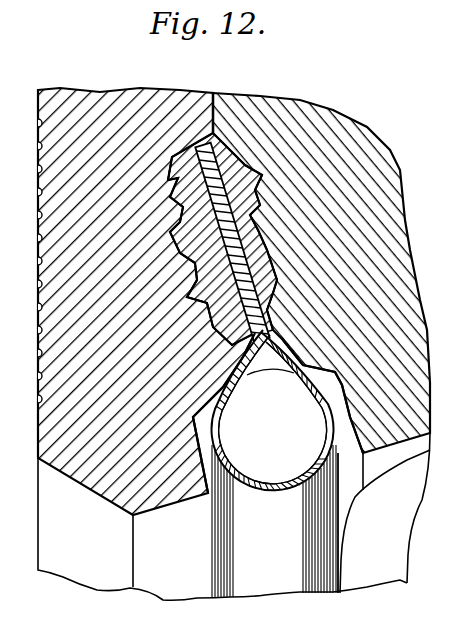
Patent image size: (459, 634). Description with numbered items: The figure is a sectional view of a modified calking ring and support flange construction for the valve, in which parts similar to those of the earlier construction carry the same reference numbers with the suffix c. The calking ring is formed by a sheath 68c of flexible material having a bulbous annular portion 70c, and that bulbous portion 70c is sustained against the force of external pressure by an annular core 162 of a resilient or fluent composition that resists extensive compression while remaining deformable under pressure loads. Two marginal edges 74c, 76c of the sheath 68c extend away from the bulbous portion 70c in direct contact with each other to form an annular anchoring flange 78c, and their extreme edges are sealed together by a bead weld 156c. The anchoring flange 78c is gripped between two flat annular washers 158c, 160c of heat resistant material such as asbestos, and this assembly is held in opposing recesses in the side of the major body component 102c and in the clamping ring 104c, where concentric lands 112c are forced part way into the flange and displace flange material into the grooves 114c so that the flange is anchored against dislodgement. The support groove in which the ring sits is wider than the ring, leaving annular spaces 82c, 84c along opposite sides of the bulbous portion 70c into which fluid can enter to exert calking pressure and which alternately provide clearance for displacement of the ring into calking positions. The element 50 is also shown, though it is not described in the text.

The clamping ring 104c is at (91, 100).
The major body component 102c is at (337, 140).
The bead weld 156c is at (217, 133).
The grooves 114c is at (183, 213).
The lands 112c is at (187, 240).
The marginal edge 74c is at (193, 270).
The annular washer 158c is at (213, 307).
The marginal edge 76c is at (243, 203).
The anchoring flange 78c is at (270, 240).
The annular washer 160c is at (263, 300).
The annular space 84c is at (343, 374).
The annular core 162 is at (330, 413).
The annular space 82c is at (200, 418).
The bulbous annular portion 70c is at (230, 487).
The sheath 68c is at (283, 493).
The base block 50 is at (390, 555).